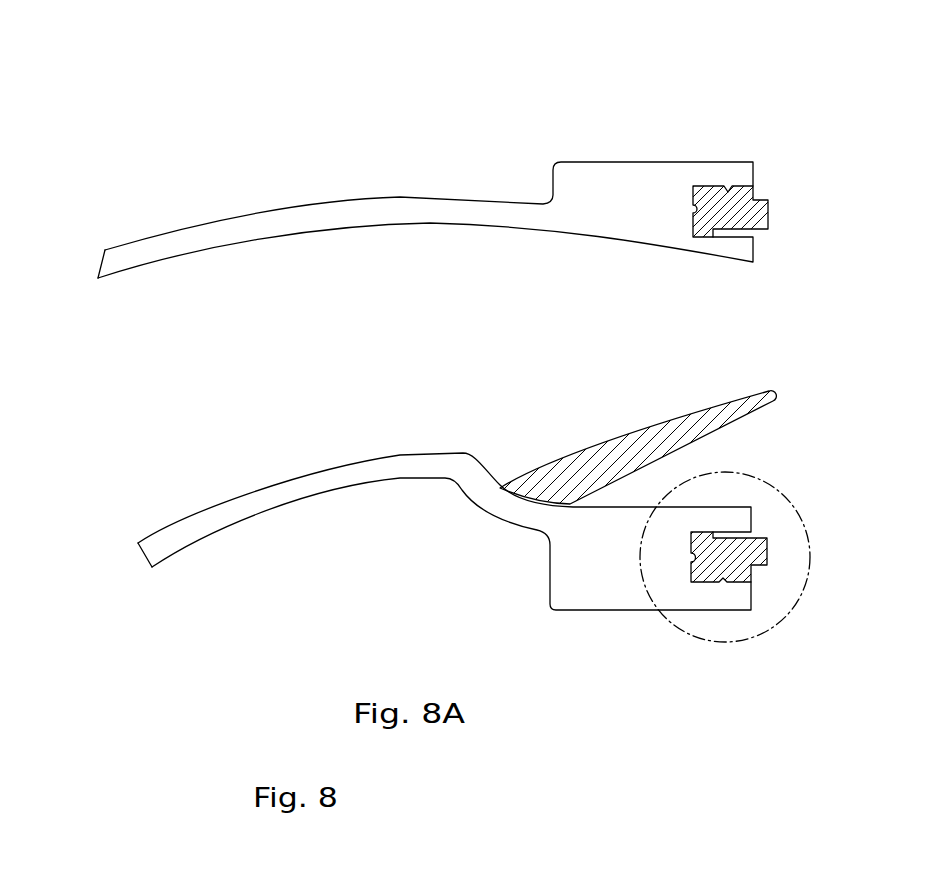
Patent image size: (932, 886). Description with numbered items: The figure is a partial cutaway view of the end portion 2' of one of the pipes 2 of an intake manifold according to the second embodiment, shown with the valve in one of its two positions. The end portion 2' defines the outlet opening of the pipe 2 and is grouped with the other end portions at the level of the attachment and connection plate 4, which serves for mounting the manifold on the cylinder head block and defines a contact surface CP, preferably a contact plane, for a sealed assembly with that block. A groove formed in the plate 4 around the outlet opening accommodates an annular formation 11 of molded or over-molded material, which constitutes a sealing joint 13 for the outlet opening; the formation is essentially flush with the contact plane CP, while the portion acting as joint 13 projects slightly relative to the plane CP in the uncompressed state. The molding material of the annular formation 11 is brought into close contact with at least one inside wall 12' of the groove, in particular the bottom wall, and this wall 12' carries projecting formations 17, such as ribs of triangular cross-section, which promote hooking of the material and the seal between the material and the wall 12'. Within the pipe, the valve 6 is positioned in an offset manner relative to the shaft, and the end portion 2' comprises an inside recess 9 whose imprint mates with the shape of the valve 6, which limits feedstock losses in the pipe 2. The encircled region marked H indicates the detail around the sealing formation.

The pipe 2 is at (425, 220).
The end portion 2' is at (425, 173).
The attachment and connection plate 4 is at (625, 178).
The projecting formations 17 is at (729, 187).
The contact surface CP is at (754, 175).
The sealing joint 13 is at (758, 417).
The annular formation 11 is at (743, 212).
The valve 6 is at (682, 430).
The inside recess 9 is at (663, 477).
The detail H is at (804, 517).
The inside wall 12' is at (444, 563).